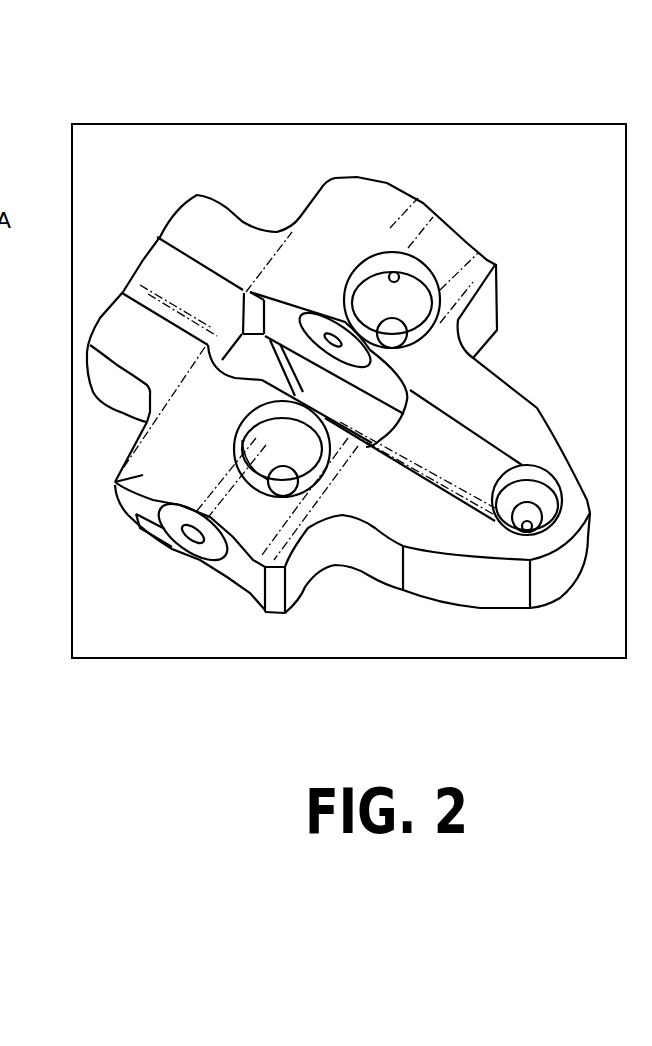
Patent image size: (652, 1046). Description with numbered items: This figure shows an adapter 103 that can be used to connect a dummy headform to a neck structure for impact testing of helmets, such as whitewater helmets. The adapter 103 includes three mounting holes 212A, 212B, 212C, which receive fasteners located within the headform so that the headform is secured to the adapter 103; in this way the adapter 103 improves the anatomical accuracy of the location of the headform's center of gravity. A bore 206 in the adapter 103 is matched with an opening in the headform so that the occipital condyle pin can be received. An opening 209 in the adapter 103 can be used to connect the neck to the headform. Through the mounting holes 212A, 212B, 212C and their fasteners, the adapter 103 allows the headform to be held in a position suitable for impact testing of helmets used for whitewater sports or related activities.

The adapter 103 is at (115, 482).
The opening 209 is at (244, 338).
The mounting hole 212A is at (528, 531).
The mounting hole 212B is at (281, 486).
The mounting hole 212C is at (395, 270).
The bore 206 is at (200, 553).